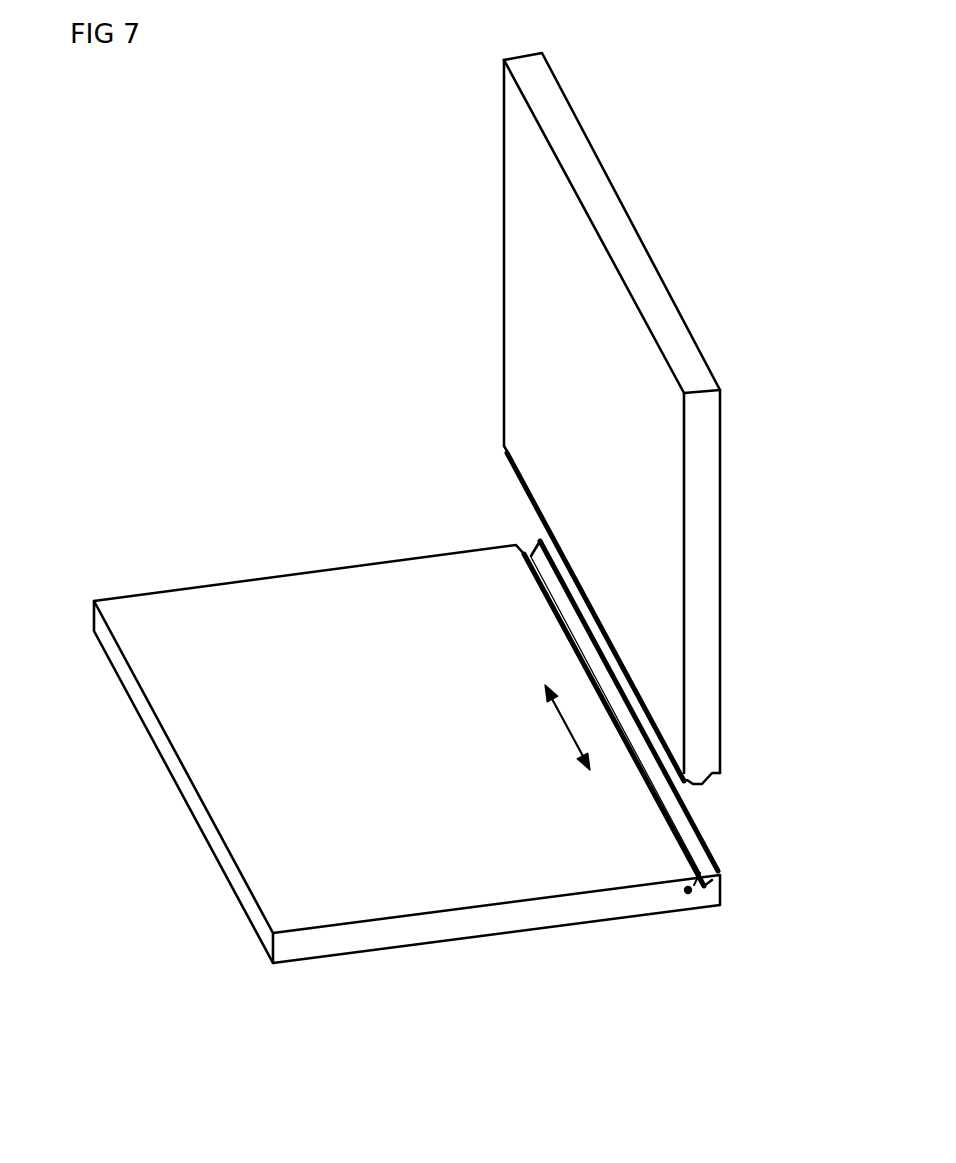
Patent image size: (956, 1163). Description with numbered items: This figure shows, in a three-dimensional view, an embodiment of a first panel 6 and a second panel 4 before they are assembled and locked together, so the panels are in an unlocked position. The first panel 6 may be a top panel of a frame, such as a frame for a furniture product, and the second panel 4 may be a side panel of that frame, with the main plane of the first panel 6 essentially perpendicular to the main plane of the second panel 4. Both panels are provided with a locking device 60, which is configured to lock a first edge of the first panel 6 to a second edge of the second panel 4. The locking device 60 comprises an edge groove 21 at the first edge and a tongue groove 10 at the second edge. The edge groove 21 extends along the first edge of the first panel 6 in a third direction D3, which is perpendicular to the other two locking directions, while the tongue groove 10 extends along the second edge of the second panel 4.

The second panel 4 is at (622, 252).
The first panel 6 is at (183, 633).
The locking device 60 is at (526, 633).
The tongue groove 10 is at (670, 793).
The edge groove 21 is at (693, 842).
The third direction D3 is at (552, 727).